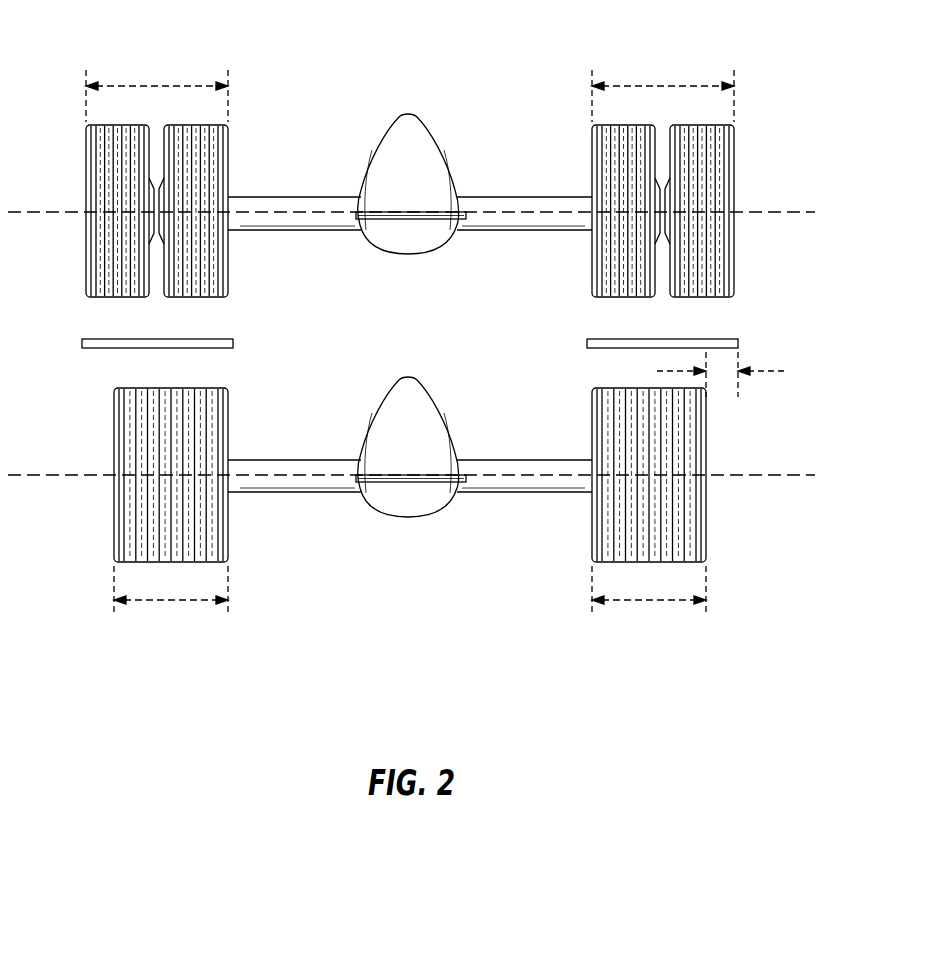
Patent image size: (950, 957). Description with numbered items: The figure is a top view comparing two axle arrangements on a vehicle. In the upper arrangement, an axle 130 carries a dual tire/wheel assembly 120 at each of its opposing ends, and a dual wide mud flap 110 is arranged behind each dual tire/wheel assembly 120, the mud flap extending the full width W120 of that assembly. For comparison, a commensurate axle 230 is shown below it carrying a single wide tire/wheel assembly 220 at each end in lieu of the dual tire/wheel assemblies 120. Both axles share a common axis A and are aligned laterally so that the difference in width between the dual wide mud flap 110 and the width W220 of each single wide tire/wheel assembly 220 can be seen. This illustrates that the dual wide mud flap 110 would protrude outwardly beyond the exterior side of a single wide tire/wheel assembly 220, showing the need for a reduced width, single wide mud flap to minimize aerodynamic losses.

The dual wide mud flap 110 is at (236, 343).
The dual tire/wheel assembly 120 is at (86, 162).
The axle 130 is at (300, 197).
The single wide tire/wheel assembly 220 is at (114, 540).
The commensurate axle 230 is at (300, 460).
The axle axis A is at (770, 212).
The width of dual tire/wheel assembly W120 is at (683, 47).
The width of single wide tire/wheel assembly W220 is at (165, 603).